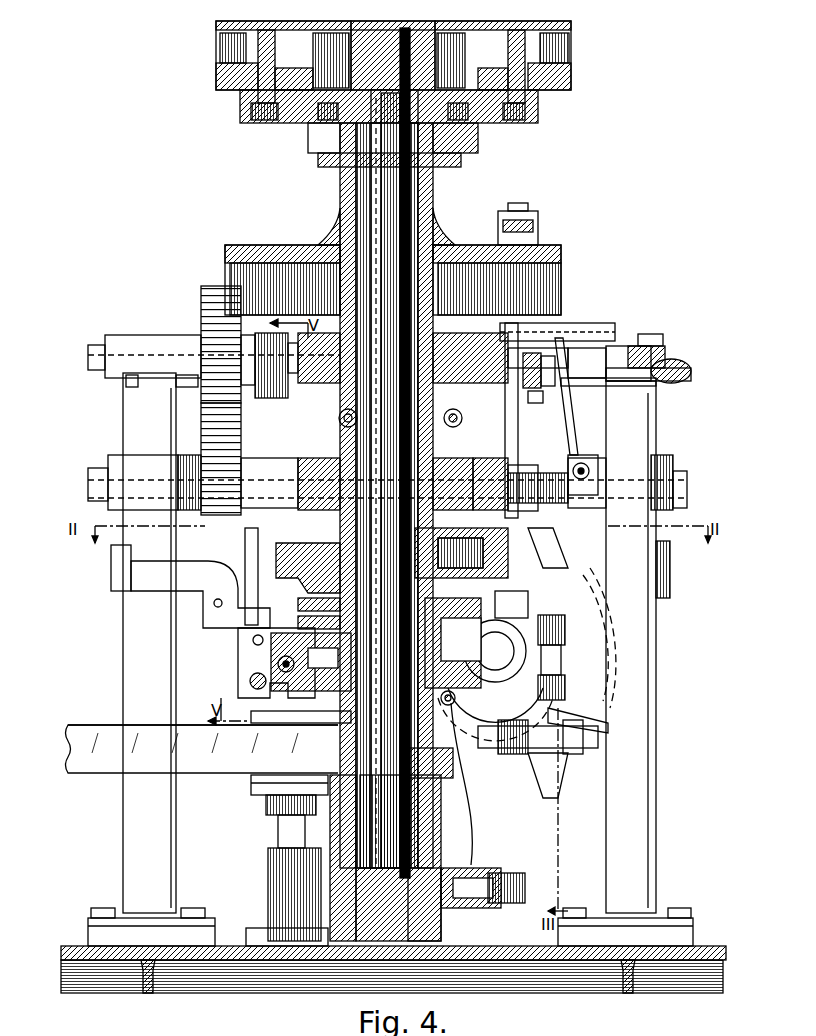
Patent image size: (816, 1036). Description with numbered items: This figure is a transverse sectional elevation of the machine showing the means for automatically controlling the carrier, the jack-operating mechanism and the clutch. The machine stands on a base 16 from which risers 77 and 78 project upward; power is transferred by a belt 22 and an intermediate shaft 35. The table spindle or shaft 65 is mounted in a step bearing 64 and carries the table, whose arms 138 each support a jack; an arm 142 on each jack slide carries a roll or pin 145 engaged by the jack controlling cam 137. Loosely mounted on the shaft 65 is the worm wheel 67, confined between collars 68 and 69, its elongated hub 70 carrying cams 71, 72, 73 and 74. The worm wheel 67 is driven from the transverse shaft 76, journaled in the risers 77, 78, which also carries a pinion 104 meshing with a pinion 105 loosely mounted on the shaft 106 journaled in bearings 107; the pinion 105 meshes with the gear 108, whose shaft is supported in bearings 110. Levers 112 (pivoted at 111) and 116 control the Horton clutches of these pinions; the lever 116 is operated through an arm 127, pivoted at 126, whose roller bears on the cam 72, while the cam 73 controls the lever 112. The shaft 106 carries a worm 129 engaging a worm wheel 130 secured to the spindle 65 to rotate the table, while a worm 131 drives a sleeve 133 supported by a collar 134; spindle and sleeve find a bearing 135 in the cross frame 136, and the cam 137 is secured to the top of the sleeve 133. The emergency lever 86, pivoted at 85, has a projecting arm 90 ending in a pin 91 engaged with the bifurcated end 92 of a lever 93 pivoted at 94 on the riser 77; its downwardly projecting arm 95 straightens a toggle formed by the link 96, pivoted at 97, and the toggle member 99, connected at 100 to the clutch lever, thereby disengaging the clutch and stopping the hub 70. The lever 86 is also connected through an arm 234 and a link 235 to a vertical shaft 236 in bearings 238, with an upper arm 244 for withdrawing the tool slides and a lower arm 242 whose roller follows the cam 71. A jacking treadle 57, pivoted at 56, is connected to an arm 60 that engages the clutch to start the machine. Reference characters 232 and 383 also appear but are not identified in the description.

The arm 138 is at (215, 25).
The arm 142 is at (240, 68).
The roll or pin 145 is at (530, 105).
The jack controlling cam 137 is at (488, 118).
The flange 383 is at (455, 152).
The table spindle or shaft 65 is at (432, 190).
The bearing 135 is at (330, 205).
The cross frame 136 is at (300, 237).
The worm 131 is at (300, 290).
The sleeve 133 is at (428, 218).
The bearings 238 is at (530, 225).
The arm 244 is at (520, 200).
The bearings 110 is at (105, 330).
The gear or pinion 108 is at (200, 310).
The pinion 105 is at (193, 445).
The lever 116 is at (272, 390).
The hub 232 is at (462, 340).
The collar 134 is at (336, 418).
The bearings 107 is at (95, 458).
The shaft 106 is at (85, 478).
The worm 129 is at (420, 447).
The worm wheel 130 is at (442, 455).
The arm 242 is at (478, 505).
The riser 78 is at (120, 650).
The riser 77 is at (640, 700).
The transverse shaft 76 is at (662, 560).
The base 16 is at (500, 980).
The belt 22 is at (75, 755).
The cam 74 is at (290, 760).
The collar 69 is at (305, 775).
The pinion 104 is at (215, 533).
The lever 112 is at (227, 540).
The pivot 111 is at (242, 612).
The collar 68 is at (345, 508).
The hub 70 is at (330, 597).
The cam 71 is at (310, 611).
The cam 72 is at (317, 630).
The pivot 126 is at (327, 650).
The arm 127 is at (330, 670).
The cam 73 is at (313, 683).
The arm 234 is at (527, 330).
The vertical shaft 236 is at (500, 398).
The pin 91 is at (530, 352).
The bifurcated end 92 is at (540, 360).
The link 235 is at (570, 338).
The connection 100 is at (538, 399).
The projecting arm 90 is at (643, 330).
The pivot 85 is at (648, 345).
The emergency lever 86 is at (680, 355).
The lever 93 is at (558, 405).
The pivot 94 is at (574, 455).
The worm wheel 67 is at (505, 540).
The bracket pivot 97 is at (557, 613).
The downwardly projecting arm 95 is at (557, 628).
The link 96 is at (550, 648).
The toggle member 99 is at (600, 714).
The intermediate shaft 35 is at (552, 742).
The arm 60 is at (456, 793).
The step bearing 64 is at (410, 857).
The jacking treadle 57 is at (490, 860).
The pivot 56 is at (517, 870).